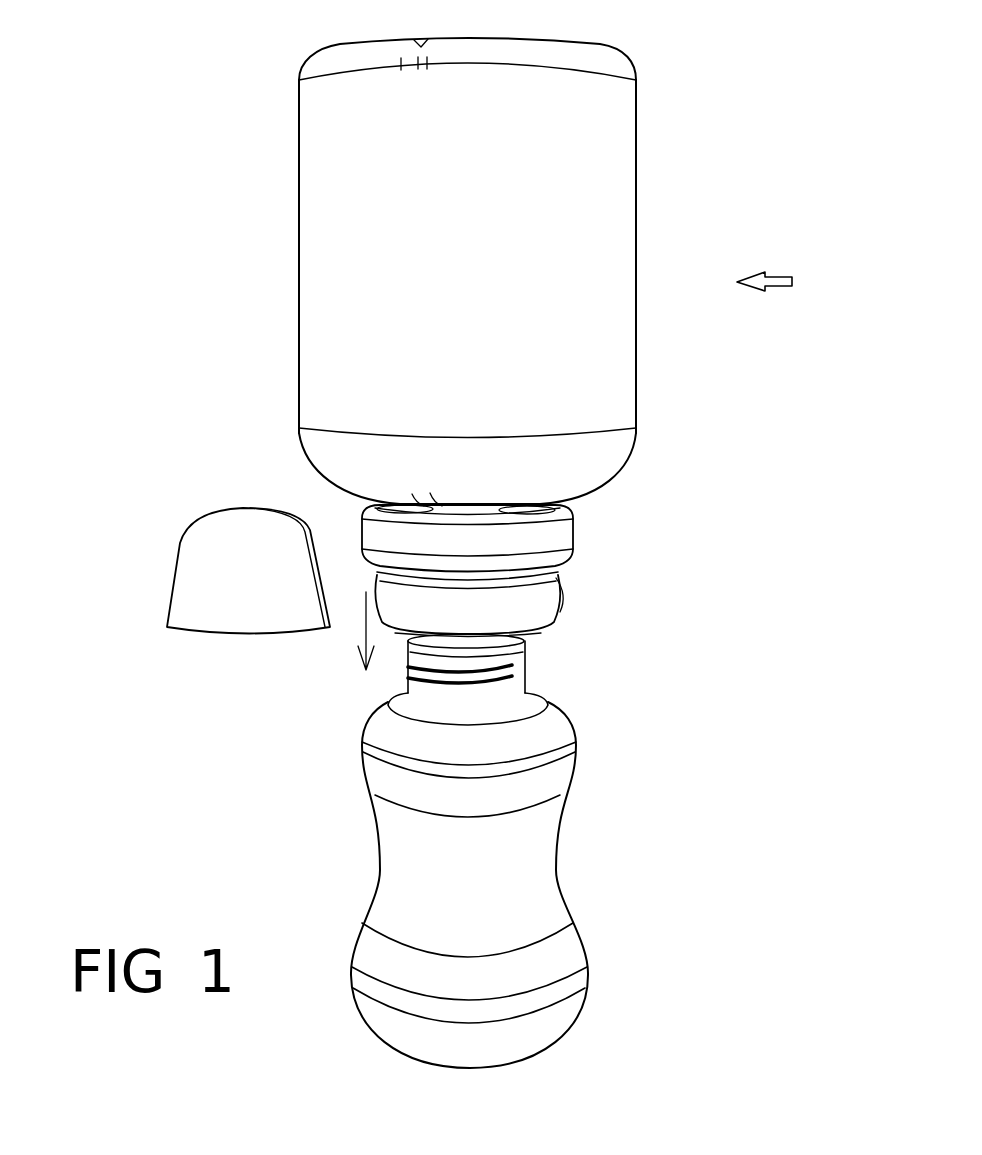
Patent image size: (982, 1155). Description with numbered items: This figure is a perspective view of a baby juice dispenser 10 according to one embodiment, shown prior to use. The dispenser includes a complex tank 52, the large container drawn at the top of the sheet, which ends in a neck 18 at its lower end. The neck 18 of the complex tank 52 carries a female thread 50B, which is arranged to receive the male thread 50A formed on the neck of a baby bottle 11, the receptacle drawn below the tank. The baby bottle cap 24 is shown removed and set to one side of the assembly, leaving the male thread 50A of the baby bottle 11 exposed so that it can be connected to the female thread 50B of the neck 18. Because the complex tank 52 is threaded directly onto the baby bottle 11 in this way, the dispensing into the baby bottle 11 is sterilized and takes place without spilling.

The baby juice dispenser 10 is at (250, 80).
The complex tank 52 is at (789, 284).
The baby bottle cap 24 is at (210, 566).
The neck of complex tank 18 is at (533, 600).
The female thread of neck 50B is at (532, 630).
The male thread of bottle 50A is at (407, 678).
The baby bottle 11 is at (527, 826).